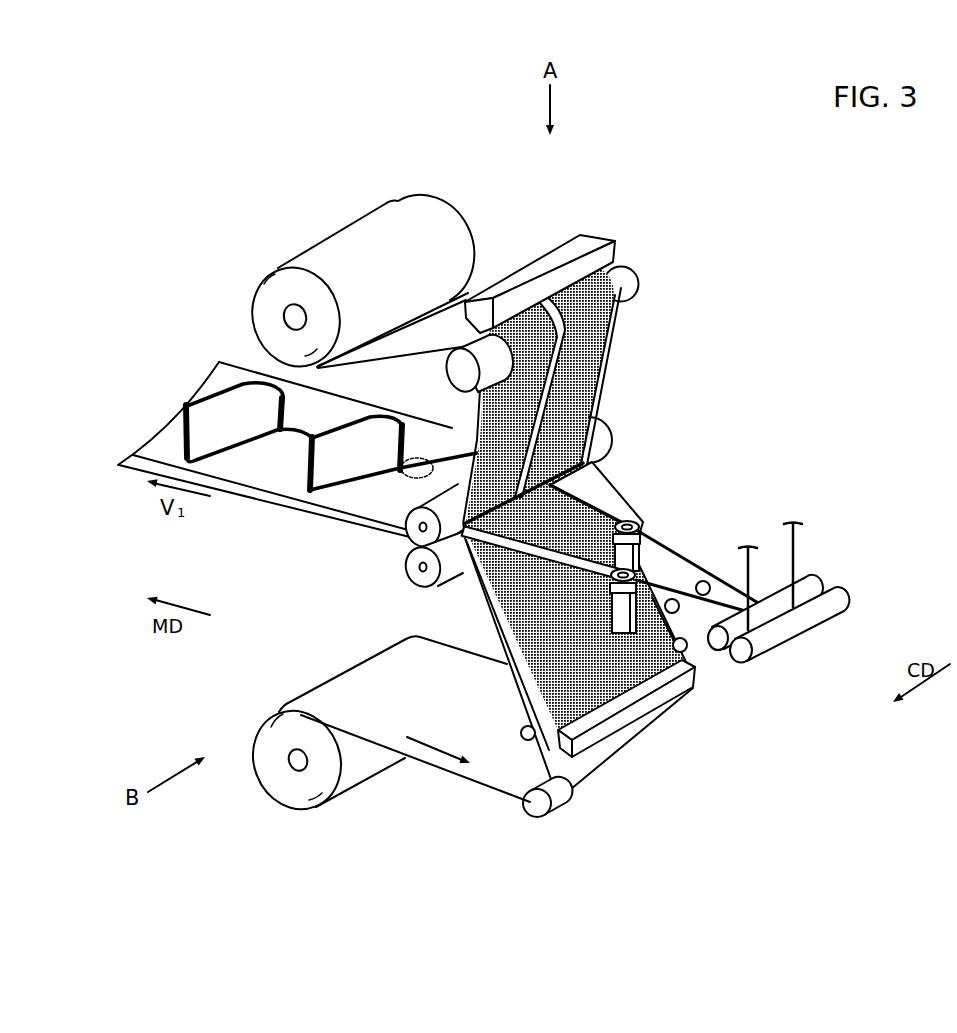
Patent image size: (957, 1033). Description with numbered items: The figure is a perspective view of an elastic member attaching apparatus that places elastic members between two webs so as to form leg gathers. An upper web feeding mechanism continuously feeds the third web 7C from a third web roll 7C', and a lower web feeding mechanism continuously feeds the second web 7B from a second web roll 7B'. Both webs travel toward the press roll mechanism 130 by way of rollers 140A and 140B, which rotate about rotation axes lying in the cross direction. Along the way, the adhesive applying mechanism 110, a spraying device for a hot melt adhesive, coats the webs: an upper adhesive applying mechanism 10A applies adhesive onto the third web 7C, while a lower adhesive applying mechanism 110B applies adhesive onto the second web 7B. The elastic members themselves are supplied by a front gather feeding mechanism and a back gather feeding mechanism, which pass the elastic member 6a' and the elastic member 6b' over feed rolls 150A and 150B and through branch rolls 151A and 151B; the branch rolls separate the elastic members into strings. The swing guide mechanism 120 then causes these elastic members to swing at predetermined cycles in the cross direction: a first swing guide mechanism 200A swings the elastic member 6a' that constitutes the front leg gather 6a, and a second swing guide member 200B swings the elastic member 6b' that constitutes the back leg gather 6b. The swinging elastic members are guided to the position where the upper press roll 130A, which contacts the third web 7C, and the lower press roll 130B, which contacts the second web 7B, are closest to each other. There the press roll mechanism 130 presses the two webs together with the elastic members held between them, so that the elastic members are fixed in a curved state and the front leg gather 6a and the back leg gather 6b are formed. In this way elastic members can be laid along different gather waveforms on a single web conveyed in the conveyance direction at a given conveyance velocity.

The third web roll 7C' is at (331, 286).
The third web 7C is at (415, 321).
The upper adhesive applying mechanism 10A is at (602, 208).
The adhesive applying mechanism 110 is at (576, 531).
The roller 140A is at (626, 281).
The front leg gather 6a is at (294, 416).
The back leg gather 6b is at (331, 468).
The swing guide mechanism 120 is at (742, 423).
The first swing guide mechanism 200A is at (612, 520).
The second swing guide member 200B is at (590, 462).
The press roll mechanism 130 is at (330, 540).
The upper press roll 130A is at (413, 530).
The lower press roll 130B is at (413, 569).
The branch roll 151A is at (675, 597).
The branch roll 151B is at (833, 593).
The elastic member 6a' is at (828, 565).
The elastic member 6b' is at (758, 560).
The feed roll 150A is at (720, 645).
The feed roll 150B is at (810, 620).
The lower adhesive applying mechanism 110B is at (640, 710).
The roller 140B is at (533, 808).
The second web roll 7B' is at (319, 729).
The second web 7B is at (415, 727).